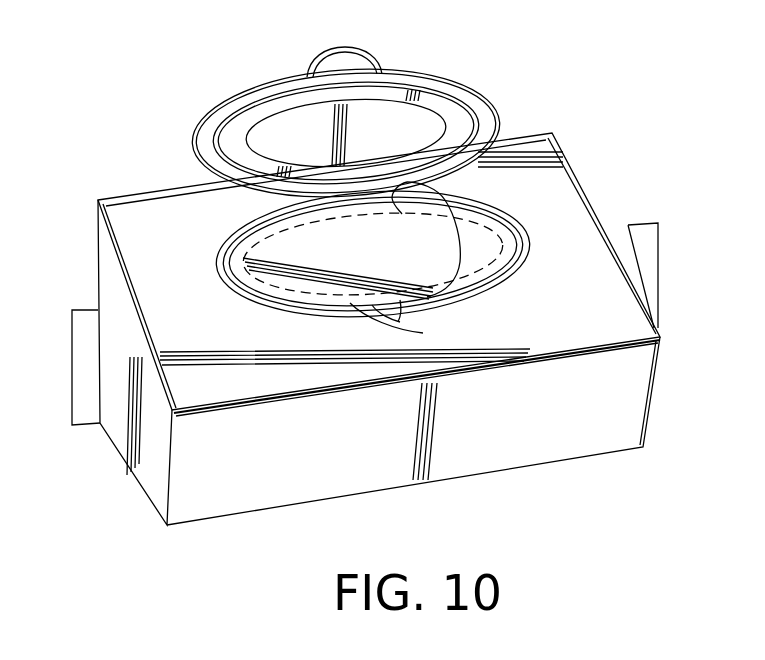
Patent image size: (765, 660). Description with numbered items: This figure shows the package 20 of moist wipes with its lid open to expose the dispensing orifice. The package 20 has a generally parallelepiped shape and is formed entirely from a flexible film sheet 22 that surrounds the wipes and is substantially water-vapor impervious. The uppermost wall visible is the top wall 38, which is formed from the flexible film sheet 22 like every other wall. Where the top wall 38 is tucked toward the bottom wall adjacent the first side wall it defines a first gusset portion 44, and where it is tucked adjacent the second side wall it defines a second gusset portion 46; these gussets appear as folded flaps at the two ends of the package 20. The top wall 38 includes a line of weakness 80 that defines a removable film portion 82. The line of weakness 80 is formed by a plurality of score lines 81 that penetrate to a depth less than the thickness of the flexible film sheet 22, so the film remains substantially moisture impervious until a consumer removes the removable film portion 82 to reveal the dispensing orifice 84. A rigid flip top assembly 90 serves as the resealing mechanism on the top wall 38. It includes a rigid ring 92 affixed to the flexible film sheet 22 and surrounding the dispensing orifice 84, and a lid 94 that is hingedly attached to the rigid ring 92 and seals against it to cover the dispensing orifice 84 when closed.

The package 20 is at (373, 279).
The flexible film sheet 22 is at (130, 213).
The top wall 38 is at (517, 170).
The first gusset portion 44 is at (113, 300).
The second gusset portion 46 is at (606, 217).
The line of weakness 80 is at (364, 260).
The score lines 81 is at (400, 307).
The removable film portion 82 is at (462, 248).
The dispensing orifice 84 is at (480, 240).
The rigid flip top assembly 90 is at (351, 120).
The rigid ring 92 is at (272, 312).
The lid 94 is at (240, 83).